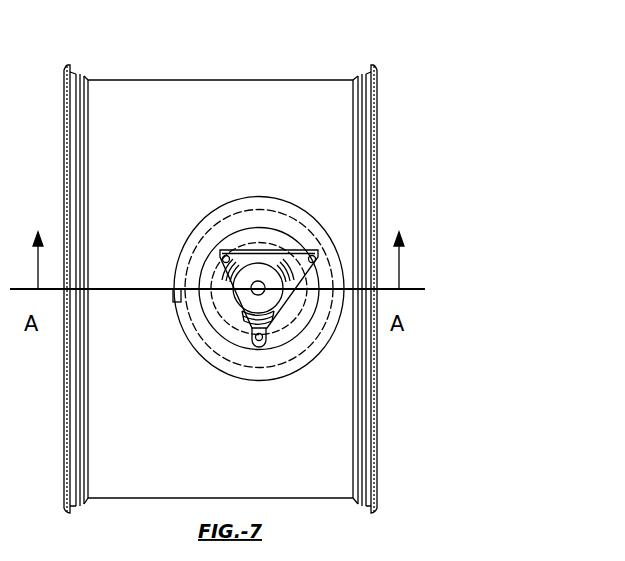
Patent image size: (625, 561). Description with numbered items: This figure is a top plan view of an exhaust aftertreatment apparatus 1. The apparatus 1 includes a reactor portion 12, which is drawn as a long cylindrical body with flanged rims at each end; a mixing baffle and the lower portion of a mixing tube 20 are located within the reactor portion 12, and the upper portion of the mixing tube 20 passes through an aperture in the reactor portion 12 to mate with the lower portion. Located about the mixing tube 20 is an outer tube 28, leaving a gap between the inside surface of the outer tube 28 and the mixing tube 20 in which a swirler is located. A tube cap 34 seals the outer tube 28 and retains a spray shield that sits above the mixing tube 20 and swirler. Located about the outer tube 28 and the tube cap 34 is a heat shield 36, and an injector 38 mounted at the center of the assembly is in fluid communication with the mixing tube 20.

The exhaust aftertreatment apparatus 1 is at (379, 148).
The reactor portion 12 is at (159, 160).
The mixing tube 20 is at (227, 332).
The outer tube 28 is at (181, 303).
The tube cap 34 is at (253, 284).
The heat shield 36 is at (178, 319).
The injector 38 is at (215, 278).